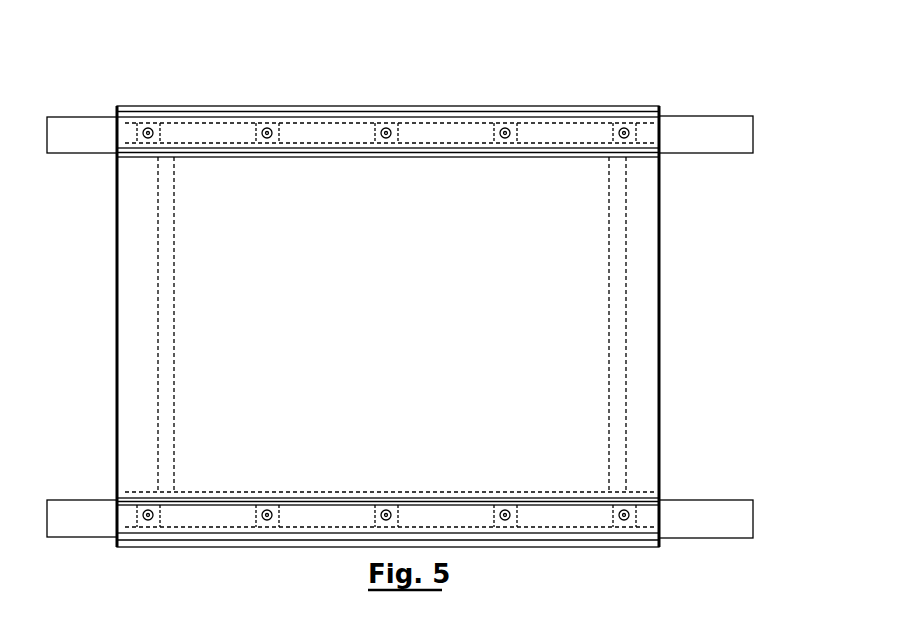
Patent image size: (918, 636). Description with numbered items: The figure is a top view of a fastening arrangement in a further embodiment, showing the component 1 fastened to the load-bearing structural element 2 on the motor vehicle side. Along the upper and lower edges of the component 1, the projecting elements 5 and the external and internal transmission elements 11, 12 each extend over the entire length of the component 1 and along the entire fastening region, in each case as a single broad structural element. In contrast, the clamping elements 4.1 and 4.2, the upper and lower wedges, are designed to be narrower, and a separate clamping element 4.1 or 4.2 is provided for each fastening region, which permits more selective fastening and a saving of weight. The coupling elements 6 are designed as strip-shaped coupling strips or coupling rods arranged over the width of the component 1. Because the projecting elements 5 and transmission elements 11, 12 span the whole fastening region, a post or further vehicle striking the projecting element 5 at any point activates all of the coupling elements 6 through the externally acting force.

The component 1 is at (147, 368).
The load-bearing structural element 2 is at (680, 137).
The clamping element, upper wedge 4.1 is at (656, 113).
The clamping element, lower wedge 4.2 is at (635, 520).
The projecting element 5 is at (233, 108).
The coupling element 6 is at (173, 318).
The external transmission element 11 is at (433, 532).
The internal transmission element 12 is at (588, 152).